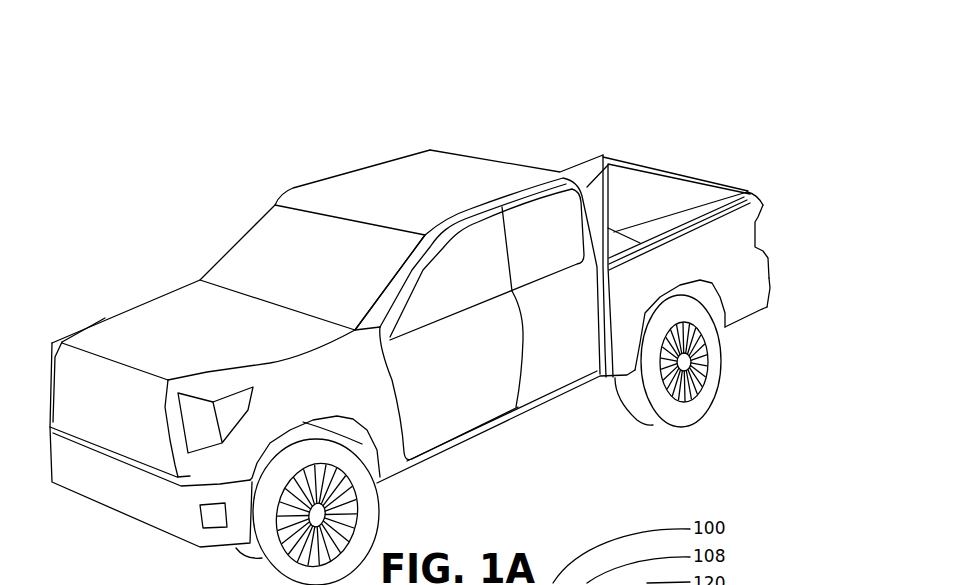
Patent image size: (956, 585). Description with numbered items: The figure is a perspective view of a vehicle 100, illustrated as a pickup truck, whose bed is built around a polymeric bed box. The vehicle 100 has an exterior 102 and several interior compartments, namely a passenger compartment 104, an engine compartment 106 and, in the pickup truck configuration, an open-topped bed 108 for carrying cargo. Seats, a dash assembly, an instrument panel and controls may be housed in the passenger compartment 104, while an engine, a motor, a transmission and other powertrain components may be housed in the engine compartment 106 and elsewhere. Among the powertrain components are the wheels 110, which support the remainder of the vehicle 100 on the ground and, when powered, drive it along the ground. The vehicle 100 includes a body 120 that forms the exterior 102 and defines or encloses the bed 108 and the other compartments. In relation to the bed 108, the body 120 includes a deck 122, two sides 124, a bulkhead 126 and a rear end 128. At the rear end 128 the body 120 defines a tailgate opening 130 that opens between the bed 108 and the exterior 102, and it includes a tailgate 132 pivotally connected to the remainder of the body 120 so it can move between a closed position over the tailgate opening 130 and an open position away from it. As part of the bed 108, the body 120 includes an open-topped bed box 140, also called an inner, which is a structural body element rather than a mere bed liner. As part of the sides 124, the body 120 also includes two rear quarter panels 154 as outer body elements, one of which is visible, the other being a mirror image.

The vehicle 100 is at (605, 153).
The exterior 102 is at (475, 382).
The passenger compartment 104 is at (230, 275).
The engine compartment 106 is at (185, 298).
The bed 108 is at (620, 155).
The wheels 110 is at (712, 302).
The body 120 is at (637, 158).
The deck 122 is at (747, 192).
The sides 124 is at (713, 249).
The bulkhead 126 is at (765, 208).
The rear end 128 is at (768, 289).
The tailgate opening 130 is at (672, 173).
The tailgate 132 is at (712, 181).
The bed box 140 is at (660, 183).
The rear quarter panels 154 is at (723, 275).